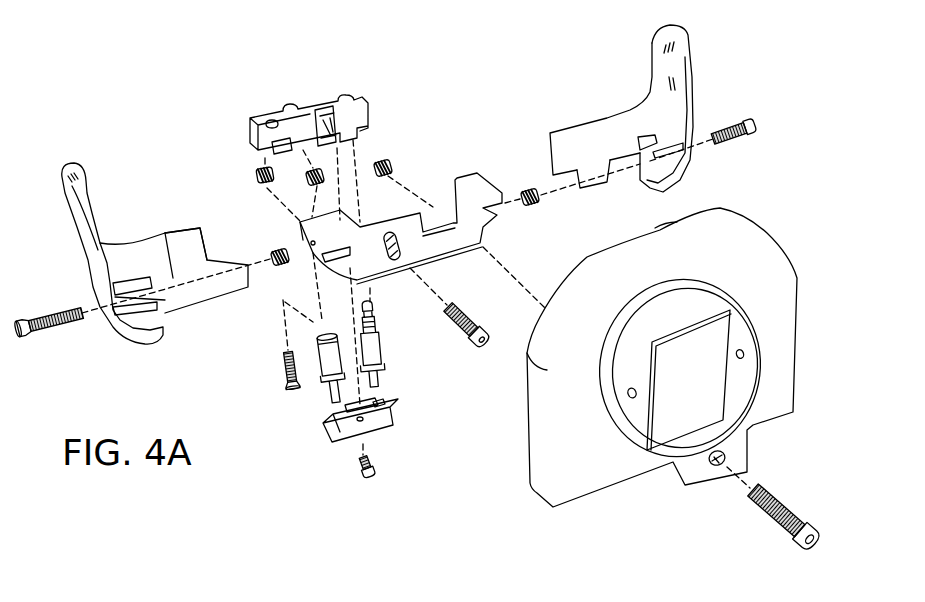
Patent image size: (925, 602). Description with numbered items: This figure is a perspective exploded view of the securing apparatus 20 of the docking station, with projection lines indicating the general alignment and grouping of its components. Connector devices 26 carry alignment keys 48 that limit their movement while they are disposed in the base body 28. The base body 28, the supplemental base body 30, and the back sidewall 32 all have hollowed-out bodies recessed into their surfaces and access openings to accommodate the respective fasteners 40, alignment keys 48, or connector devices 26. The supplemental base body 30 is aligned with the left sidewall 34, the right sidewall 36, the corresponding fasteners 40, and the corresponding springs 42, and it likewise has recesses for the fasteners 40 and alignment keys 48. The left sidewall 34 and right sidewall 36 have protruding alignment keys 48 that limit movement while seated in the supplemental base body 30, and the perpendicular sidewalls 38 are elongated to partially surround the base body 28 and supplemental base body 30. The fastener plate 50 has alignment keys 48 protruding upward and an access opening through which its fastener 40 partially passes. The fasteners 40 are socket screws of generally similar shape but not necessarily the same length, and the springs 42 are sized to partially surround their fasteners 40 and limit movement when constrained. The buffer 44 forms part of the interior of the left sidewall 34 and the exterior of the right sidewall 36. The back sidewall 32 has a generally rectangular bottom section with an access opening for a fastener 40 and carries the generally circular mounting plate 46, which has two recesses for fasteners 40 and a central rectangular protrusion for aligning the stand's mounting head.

The securing apparatus 20 is at (120, 45).
The connector device 26 is at (380, 353).
The base body 28 is at (324, 100).
The supplemental base body 30 is at (476, 173).
The back sidewall 32 is at (560, 438).
The left sidewall 34 is at (680, 115).
The right sidewall 36 is at (90, 253).
The perpendicular sidewall 38 is at (130, 253).
The fastener 40 is at (28, 337).
The spring 42 is at (386, 160).
The buffer 44 is at (67, 187).
The mounting plate 46 is at (740, 320).
The alignment key 48 is at (343, 113).
The fastener plate 50 is at (340, 432).